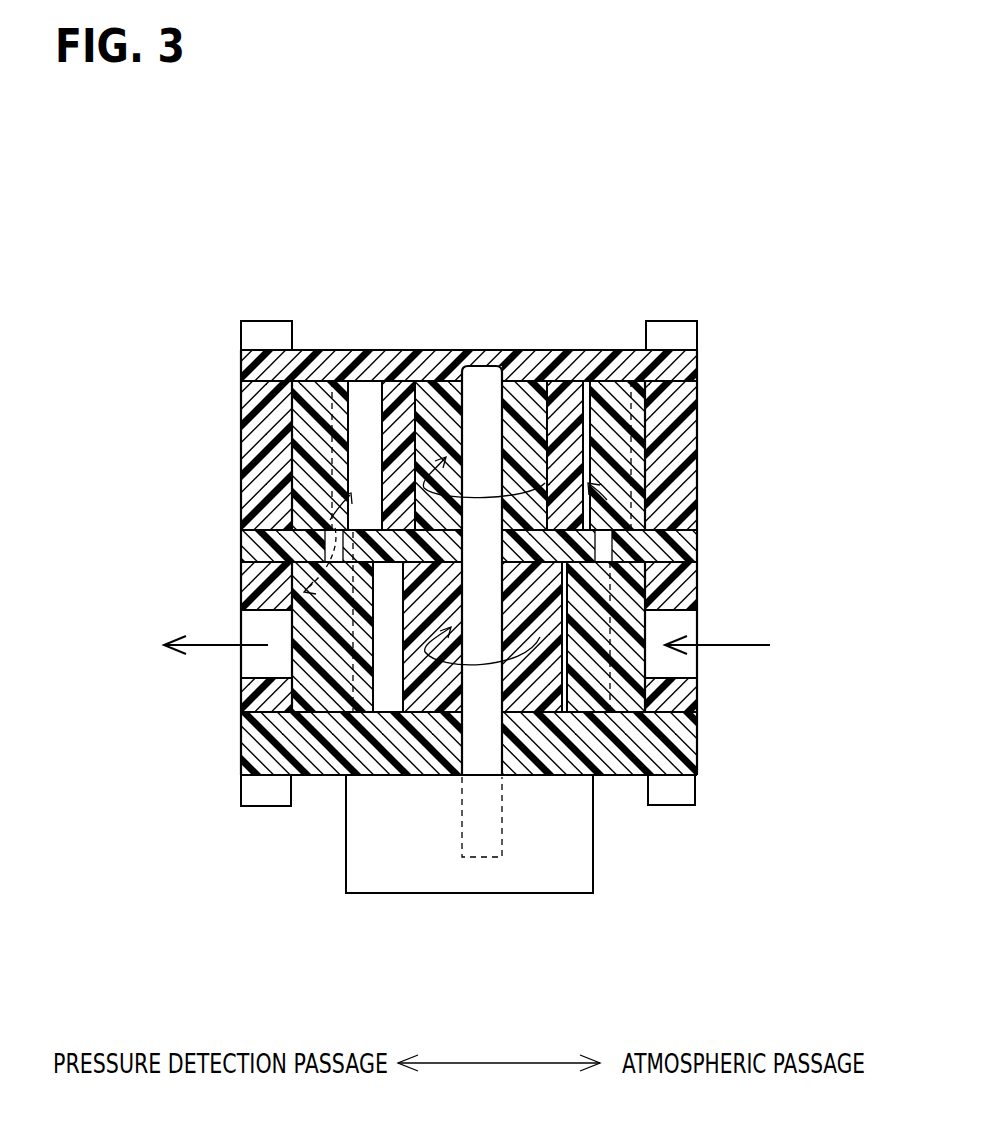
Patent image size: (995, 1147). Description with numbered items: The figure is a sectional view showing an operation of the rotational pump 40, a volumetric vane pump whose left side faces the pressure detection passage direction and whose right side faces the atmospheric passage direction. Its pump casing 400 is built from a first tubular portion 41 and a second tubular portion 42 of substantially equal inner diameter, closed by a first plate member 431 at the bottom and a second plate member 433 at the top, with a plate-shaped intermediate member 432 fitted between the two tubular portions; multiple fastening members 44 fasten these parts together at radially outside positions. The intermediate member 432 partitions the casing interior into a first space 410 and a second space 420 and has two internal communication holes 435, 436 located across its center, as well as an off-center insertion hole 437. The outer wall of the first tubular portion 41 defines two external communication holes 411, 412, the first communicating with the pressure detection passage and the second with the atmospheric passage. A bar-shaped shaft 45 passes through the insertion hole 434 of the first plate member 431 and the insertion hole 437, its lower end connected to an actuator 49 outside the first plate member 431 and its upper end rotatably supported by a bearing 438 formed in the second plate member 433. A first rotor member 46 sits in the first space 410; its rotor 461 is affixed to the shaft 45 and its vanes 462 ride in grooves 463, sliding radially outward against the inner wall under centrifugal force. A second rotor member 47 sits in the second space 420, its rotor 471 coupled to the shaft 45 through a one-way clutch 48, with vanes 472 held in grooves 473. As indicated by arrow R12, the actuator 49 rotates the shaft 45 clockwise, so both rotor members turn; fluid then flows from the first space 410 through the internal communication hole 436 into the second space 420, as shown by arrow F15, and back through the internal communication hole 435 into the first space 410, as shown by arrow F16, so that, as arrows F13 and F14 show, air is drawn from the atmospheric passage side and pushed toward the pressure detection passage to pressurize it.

The rotational pump 40 is at (701, 281).
The pump casing 400 is at (236, 425).
The first tubular portion 41 is at (252, 592).
The first space 410 is at (255, 700).
The external communication hole 411 is at (265, 612).
The external communication hole 412 is at (667, 611).
The second tubular portion 42 is at (252, 466).
The second space 420 is at (298, 496).
The first plate member 431 is at (255, 749).
The intermediate member 432 is at (255, 545).
The second plate member 433 is at (257, 367).
The insertion hole 434 is at (477, 776).
The internal communication hole 435 is at (252, 565).
The internal communication hole 436 is at (693, 561).
The insertion hole 437 is at (650, 648).
The bearing 438 is at (481, 392).
The fastening members 44 is at (265, 332).
The shaft 45 is at (468, 366).
The first rotor member 46 is at (360, 776).
The rotor 461 is at (548, 776).
The vanes 462 is at (313, 776).
The grooves 463 is at (393, 776).
The second rotor member 47 is at (565, 374).
The rotor 471 is at (398, 393).
The vanes 472 is at (313, 362).
The grooves 473 is at (352, 400).
The one-way clutch 48 is at (440, 395).
The actuator 49 is at (378, 894).
The arrow R12 is at (457, 400).
The arrow F13 is at (730, 645).
The arrow F14 is at (210, 648).
The arrow F15 is at (690, 525).
The arrow F16 is at (290, 527).